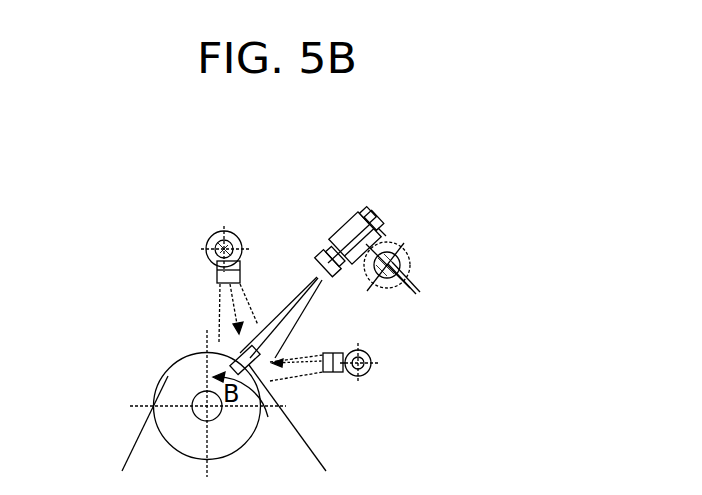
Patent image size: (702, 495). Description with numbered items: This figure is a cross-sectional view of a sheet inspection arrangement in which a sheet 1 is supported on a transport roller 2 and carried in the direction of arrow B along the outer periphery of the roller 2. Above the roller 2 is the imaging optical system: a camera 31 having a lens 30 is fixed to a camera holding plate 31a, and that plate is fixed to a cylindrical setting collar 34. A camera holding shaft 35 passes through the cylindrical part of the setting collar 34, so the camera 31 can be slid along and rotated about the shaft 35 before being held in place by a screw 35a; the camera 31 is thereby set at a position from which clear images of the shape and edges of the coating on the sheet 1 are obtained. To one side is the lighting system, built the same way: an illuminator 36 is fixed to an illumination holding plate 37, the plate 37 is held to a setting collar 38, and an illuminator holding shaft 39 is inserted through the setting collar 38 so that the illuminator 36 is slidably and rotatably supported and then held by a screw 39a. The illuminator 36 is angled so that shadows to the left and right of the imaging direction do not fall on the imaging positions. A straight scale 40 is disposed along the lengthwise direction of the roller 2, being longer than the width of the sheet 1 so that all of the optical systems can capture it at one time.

The sheet 1 is at (308, 447).
The transport roller 2 is at (181, 368).
The lens 30 is at (322, 242).
The camera 31 is at (352, 214).
The camera holding plate 31a is at (378, 231).
The setting collar 34 is at (408, 254).
The camera holding shaft 35 is at (402, 268).
The screw 35a is at (415, 291).
The illuminator 36 is at (218, 289).
The illumination holding plate 37 is at (217, 266).
The setting collar 38 is at (207, 249).
The illuminator holding shaft 39 is at (207, 241).
The screw 39a is at (226, 231).
The straight scale 40 is at (304, 356).